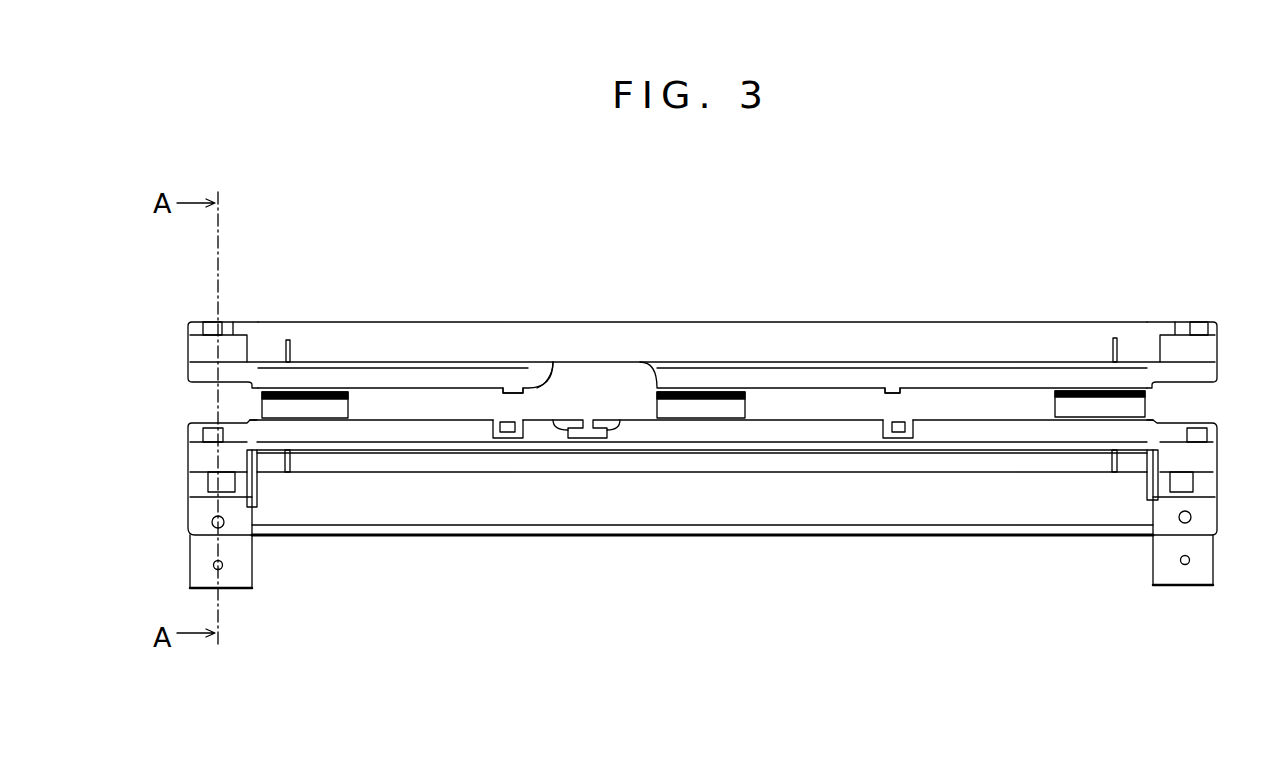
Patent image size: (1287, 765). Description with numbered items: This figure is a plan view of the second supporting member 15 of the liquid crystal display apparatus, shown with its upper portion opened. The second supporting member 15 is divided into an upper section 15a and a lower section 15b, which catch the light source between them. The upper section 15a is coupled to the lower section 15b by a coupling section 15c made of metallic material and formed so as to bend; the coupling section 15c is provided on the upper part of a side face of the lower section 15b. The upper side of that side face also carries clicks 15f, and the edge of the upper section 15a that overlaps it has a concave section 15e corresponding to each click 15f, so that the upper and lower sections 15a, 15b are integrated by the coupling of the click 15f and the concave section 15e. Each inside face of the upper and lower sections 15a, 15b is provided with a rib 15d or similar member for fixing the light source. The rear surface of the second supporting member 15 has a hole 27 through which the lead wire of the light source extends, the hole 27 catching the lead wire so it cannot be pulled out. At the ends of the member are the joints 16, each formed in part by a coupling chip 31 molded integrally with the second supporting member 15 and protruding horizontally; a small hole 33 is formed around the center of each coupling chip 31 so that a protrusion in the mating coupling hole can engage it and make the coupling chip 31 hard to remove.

The second supporting member 15 is at (165, 485).
The upper section 15a is at (792, 322).
The lower section 15b is at (668, 507).
The coupling section 15c is at (312, 410).
The rib 15d is at (372, 440).
The concave section 15e is at (503, 388).
The click 15f is at (503, 425).
The joint 16 is at (116, 610).
The hole 27 is at (563, 362).
The coupling chip 31 is at (188, 563).
The small hole 33 is at (222, 568).